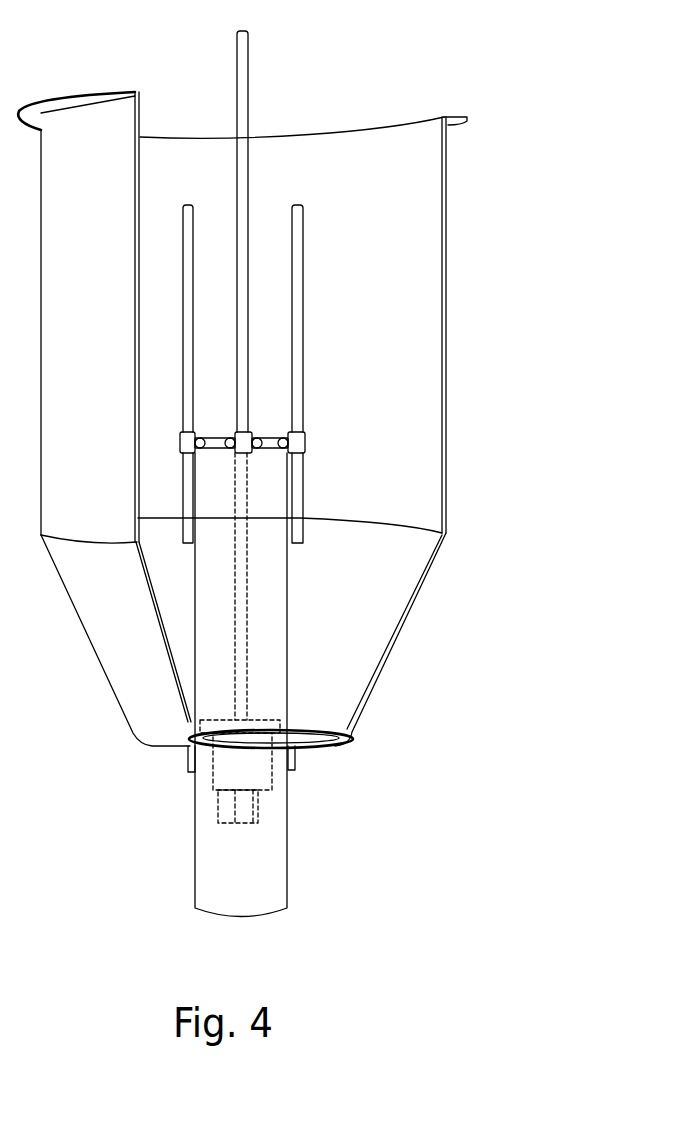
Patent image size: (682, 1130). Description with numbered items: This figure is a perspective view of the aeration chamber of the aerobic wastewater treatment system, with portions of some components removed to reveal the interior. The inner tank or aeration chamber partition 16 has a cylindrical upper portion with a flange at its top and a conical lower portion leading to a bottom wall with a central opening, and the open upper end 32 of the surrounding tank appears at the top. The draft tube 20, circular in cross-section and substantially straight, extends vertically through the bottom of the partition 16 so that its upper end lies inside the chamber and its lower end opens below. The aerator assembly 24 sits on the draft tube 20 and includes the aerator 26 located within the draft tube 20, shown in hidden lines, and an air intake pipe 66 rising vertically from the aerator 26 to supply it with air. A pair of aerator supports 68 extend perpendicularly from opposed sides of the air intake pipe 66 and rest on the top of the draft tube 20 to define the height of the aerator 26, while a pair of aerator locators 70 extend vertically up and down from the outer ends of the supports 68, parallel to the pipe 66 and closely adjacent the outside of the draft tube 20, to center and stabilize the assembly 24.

The aeration chamber partition 16 is at (447, 437).
The draft tube 20 is at (288, 878).
The aerator assembly 24 is at (213, 820).
The aerator 26 is at (272, 783).
The open upper end 32 is at (378, 131).
The air intake pipe 66 is at (249, 117).
The aerator supports 68 is at (275, 432).
The aerator locators 70 is at (304, 280).